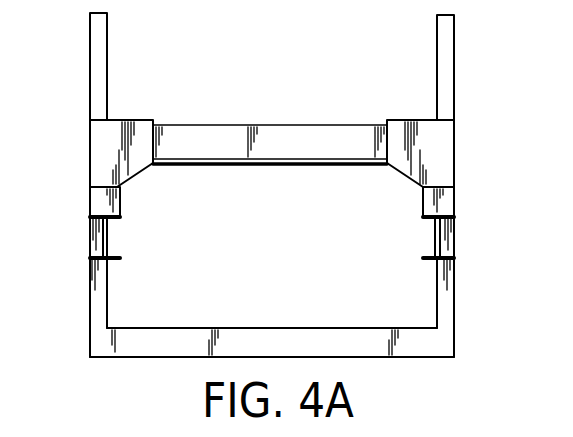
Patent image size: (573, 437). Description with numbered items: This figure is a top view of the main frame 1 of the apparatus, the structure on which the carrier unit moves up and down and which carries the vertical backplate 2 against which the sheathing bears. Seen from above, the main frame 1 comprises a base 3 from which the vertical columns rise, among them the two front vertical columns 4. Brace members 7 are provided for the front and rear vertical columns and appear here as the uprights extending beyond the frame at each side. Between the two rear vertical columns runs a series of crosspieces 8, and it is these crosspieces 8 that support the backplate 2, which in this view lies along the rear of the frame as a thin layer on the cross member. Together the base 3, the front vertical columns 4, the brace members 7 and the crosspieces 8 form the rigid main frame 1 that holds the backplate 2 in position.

The main frame 1 is at (76, 241).
The vertical backplate 2 is at (325, 167).
The base 3 is at (145, 347).
The front vertical columns 4 is at (108, 233).
The brace members 7 is at (92, 88).
The crosspieces 8 is at (283, 127).